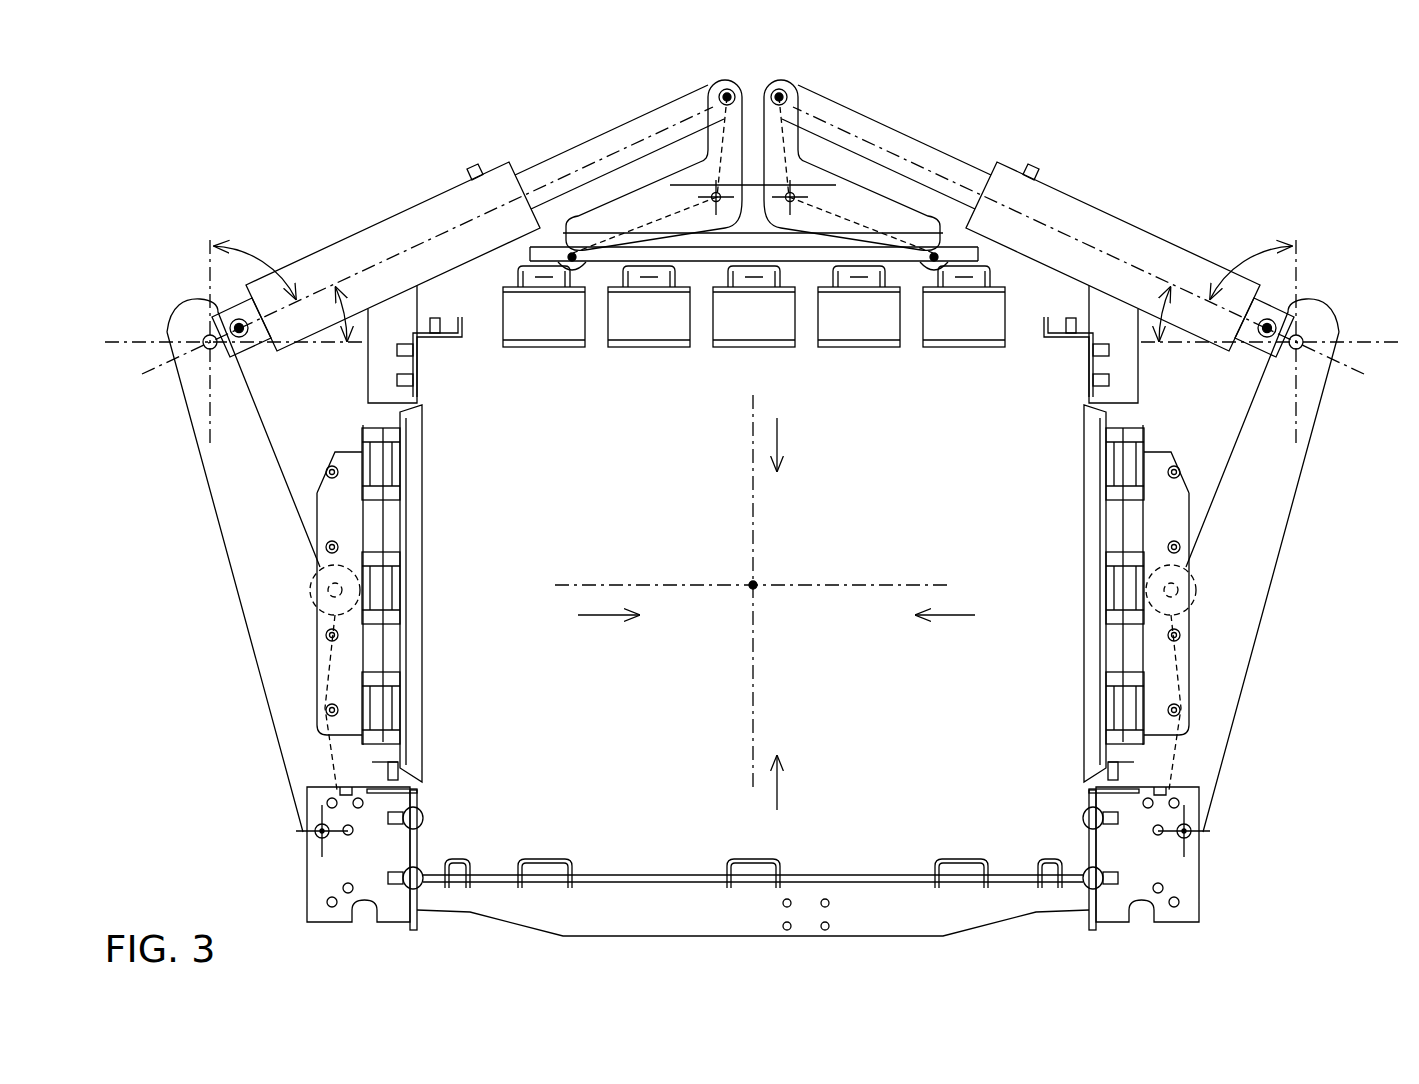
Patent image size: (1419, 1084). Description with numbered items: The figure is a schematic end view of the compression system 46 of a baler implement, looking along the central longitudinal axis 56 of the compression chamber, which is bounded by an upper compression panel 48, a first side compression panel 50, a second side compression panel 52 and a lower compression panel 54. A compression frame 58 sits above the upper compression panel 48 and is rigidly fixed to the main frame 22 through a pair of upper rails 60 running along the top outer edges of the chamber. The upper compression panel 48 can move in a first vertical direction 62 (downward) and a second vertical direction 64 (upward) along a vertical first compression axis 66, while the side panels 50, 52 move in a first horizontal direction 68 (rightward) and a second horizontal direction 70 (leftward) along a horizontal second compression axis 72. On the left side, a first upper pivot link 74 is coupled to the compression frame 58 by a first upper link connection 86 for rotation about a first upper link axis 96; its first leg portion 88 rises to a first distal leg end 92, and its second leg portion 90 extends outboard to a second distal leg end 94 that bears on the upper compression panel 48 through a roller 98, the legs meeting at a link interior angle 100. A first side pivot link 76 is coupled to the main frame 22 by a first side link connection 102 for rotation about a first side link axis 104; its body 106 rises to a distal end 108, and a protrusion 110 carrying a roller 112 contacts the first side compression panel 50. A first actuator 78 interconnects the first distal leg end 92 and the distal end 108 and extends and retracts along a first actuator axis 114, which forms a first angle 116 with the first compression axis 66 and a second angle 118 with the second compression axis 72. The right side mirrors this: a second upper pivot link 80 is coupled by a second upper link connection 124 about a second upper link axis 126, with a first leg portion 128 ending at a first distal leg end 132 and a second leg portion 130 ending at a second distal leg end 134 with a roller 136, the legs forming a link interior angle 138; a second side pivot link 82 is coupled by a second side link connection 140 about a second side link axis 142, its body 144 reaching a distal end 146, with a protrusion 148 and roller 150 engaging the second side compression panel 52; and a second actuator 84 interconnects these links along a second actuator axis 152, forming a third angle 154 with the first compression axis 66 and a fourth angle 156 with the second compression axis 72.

The main frame 22 is at (322, 875).
The compression system 46 is at (1068, 80).
The upper compression panel 48 is at (727, 347).
The first side compression panel 50 is at (413, 505).
The second side compression panel 52 is at (1093, 505).
The lower compression panel 54 is at (738, 860).
The central longitudinal axis 56 is at (756, 584).
The compression frame 58 is at (868, 188).
The upper rails 60 is at (425, 367).
The first vertical direction 62 is at (780, 437).
The second vertical direction 64 is at (780, 797).
The first compression axis 66 is at (750, 713).
The first horizontal direction 68 is at (600, 617).
The second horizontal direction 70 is at (955, 617).
The second compression axis 72 is at (834, 590).
The first upper pivot link 74 is at (618, 198).
The first side pivot link 76 is at (220, 538).
The first actuator 78 is at (404, 212).
The second upper pivot link 80 is at (888, 198).
The second side pivot link 82 is at (1286, 538).
The second actuator 84 is at (1108, 212).
The first upper link connection 86 is at (668, 215).
The first leg portion 88 is at (647, 237).
The second leg portion 90 is at (718, 150).
The first distal leg end 92 is at (572, 262).
The second distal leg end 94 is at (725, 88).
The first upper link axis 96 is at (735, 222).
The roller 98 is at (586, 270).
The link interior angle 100 is at (720, 147).
The first side link connection 102 is at (318, 828).
The first side link axis 104 is at (316, 834).
The body 106 is at (235, 465).
The distal end 108 is at (168, 308).
The protrusion 110 is at (362, 605).
The roller 112 is at (310, 593).
The first actuator axis 114 is at (375, 262).
The first angle 116 is at (248, 253).
The second angle 118 is at (388, 282).
The second upper link connection 124 is at (790, 175).
The second upper link axis 126 is at (783, 212).
The first leg portion 128 is at (930, 200).
The second leg portion 130 is at (838, 215).
The first distal leg end 132 is at (945, 222).
The second distal leg end 134 is at (780, 88).
The roller 136 is at (932, 263).
The link interior angle 138 is at (880, 180).
The second side link connection 140 is at (1190, 834).
The second side link axis 142 is at (1188, 828).
The body 144 is at (1271, 465).
The distal end 146 is at (1322, 310).
The protrusion 148 is at (1144, 605).
The roller 150 is at (1196, 593).
The second actuator axis 152 is at (1131, 262).
The third angle 154 is at (1270, 240).
The fourth angle 156 is at (1130, 284).